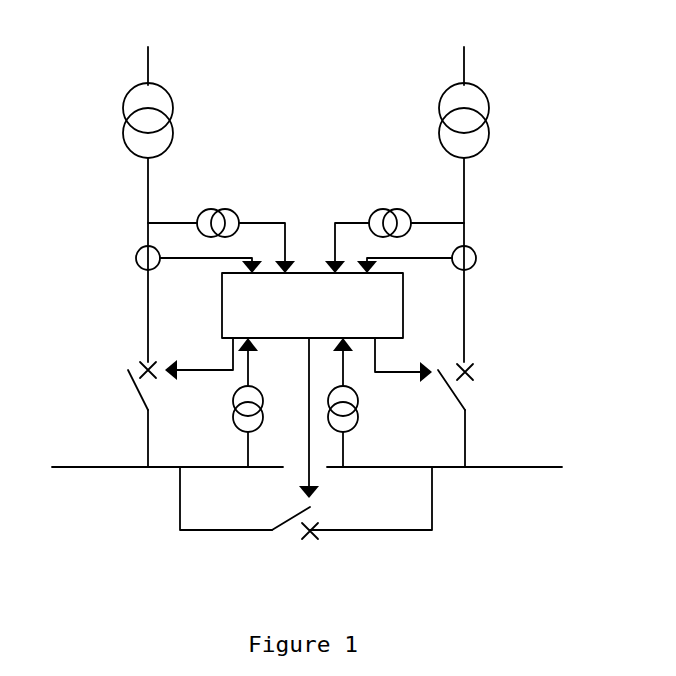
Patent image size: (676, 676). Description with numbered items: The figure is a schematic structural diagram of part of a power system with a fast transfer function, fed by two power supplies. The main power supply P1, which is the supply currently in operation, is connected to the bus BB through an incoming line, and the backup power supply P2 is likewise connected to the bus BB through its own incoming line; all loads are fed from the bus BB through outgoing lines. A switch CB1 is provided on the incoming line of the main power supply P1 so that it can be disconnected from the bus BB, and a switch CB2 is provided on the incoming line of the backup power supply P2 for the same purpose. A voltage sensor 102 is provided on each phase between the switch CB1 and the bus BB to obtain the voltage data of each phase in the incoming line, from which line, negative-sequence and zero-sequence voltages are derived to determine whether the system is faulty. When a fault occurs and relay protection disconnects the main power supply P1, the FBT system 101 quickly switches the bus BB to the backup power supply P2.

The main power supply P1 is at (148, 65).
The backup power supply P2 is at (464, 62).
The FBT system 101 is at (312, 305).
The voltage sensor 102 is at (233, 417).
The switch CB1 is at (113, 414).
The switch CB2 is at (480, 415).
The bus BB is at (103, 468).